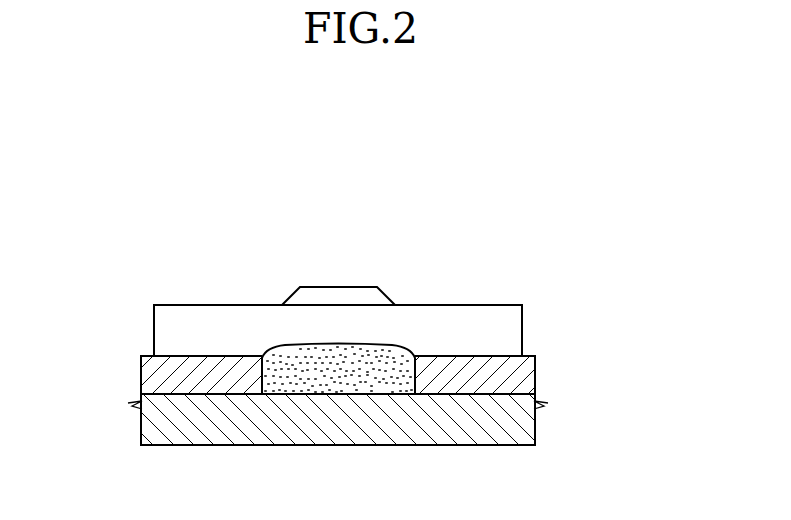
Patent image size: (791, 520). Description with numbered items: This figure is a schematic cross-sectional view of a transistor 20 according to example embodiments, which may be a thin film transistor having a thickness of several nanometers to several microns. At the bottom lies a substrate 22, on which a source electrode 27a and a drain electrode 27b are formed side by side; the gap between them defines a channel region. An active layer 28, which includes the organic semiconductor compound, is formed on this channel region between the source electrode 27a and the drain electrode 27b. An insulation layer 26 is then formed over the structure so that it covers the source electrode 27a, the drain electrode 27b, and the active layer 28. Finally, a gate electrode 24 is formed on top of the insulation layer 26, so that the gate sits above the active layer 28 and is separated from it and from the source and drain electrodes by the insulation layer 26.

The transistor 20 is at (268, 226).
The substrate 22 is at (515, 425).
The gate electrode 24 is at (342, 298).
The insulation layer 26 is at (202, 322).
The source electrode 27a is at (160, 372).
The drain electrode 27b is at (517, 373).
The active layer 28 is at (389, 362).